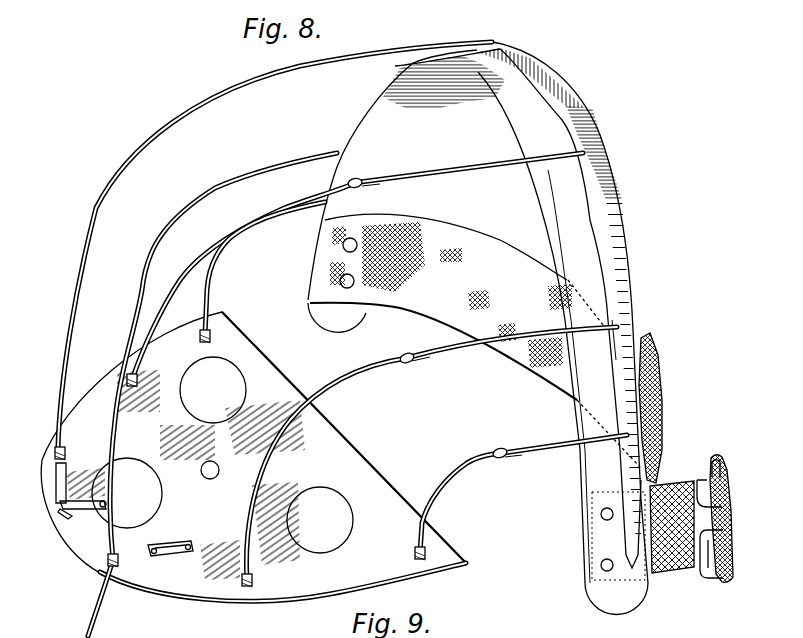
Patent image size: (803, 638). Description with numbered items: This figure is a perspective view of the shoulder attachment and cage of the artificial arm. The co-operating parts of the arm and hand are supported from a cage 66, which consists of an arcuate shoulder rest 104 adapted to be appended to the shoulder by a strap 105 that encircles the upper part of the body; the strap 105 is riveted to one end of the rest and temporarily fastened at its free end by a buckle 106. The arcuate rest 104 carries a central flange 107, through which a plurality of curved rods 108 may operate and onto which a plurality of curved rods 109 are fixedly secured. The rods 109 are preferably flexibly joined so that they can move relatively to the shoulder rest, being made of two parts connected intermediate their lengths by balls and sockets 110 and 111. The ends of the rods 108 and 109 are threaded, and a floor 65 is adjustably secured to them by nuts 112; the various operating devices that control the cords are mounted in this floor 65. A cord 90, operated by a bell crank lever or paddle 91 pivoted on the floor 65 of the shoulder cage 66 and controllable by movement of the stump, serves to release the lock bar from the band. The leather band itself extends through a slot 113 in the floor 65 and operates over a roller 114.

The arcuate shoulder rest 104 is at (618, 223).
The shoulder cage 66 is at (570, 343).
The central flange 107 is at (625, 313).
The strap 105 is at (520, 262).
The floor 65 is at (253, 457).
The slot 113 is at (183, 590).
The curved rods 108 is at (218, 266).
The cord 90 is at (95, 610).
The curved rods 109 is at (463, 176).
The balls and sockets 110 is at (362, 186).
The balls and sockets 111 is at (356, 180).
The nuts 112 is at (200, 342).
The roller 114 is at (172, 541).
The bell crank lever or paddle 91 is at (58, 505).
The buckle 106 is at (720, 585).